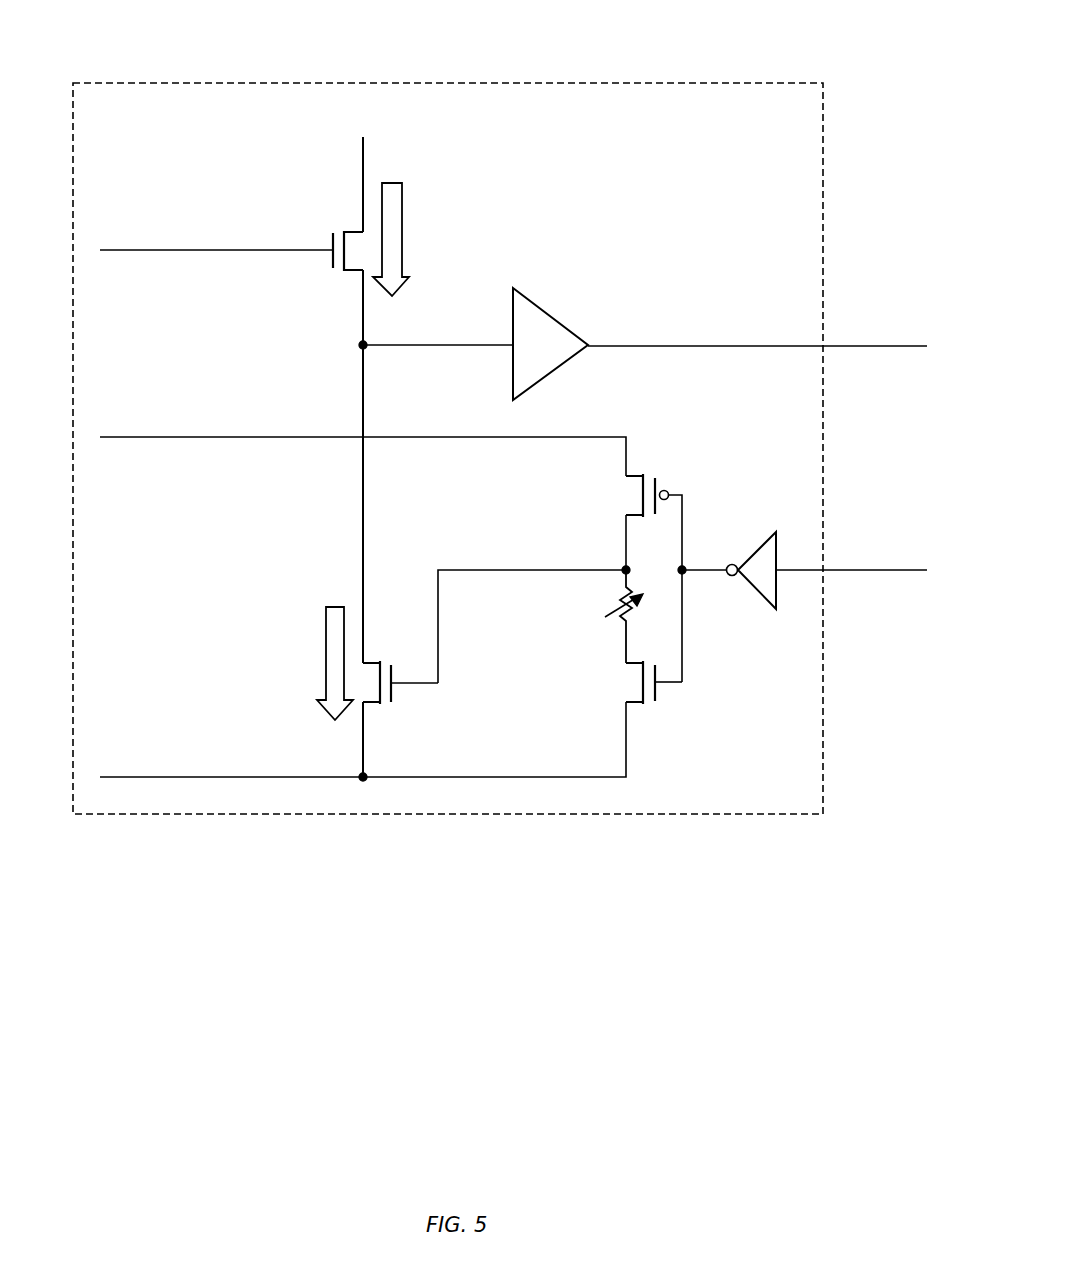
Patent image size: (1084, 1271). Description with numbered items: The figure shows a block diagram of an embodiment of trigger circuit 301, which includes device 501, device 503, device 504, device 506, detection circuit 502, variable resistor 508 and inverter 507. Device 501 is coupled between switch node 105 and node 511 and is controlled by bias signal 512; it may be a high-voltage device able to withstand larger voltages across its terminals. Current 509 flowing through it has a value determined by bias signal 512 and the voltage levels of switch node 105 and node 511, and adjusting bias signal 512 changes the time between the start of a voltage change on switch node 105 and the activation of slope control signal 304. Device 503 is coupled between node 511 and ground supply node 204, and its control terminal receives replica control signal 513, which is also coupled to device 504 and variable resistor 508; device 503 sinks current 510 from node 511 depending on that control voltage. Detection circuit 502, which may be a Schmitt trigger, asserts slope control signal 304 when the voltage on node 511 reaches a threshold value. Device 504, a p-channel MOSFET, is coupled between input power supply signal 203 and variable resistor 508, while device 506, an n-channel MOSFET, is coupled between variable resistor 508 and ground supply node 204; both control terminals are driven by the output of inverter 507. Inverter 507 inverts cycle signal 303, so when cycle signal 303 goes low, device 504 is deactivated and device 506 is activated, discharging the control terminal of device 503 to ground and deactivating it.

The trigger circuit 301 is at (600, 80).
The switch node 105 is at (363, 160).
The bias signal 512 is at (216, 239).
The current 509 is at (404, 238).
The device 501 is at (341, 274).
The detection circuit 502 is at (543, 307).
The slope control signal 304 is at (757, 321).
The input power supply signal 203 is at (363, 433).
The node 511 is at (361, 503).
The replica control signal 513 is at (486, 567).
The device 504 is at (631, 495).
The inverter 507 is at (755, 552).
The cycle signal 303 is at (851, 559).
The variable resistor 508 is at (613, 604).
The device 506 is at (636, 685).
The current 510 is at (325, 637).
The device 503 is at (389, 706).
The ground supply node 204 is at (363, 736).